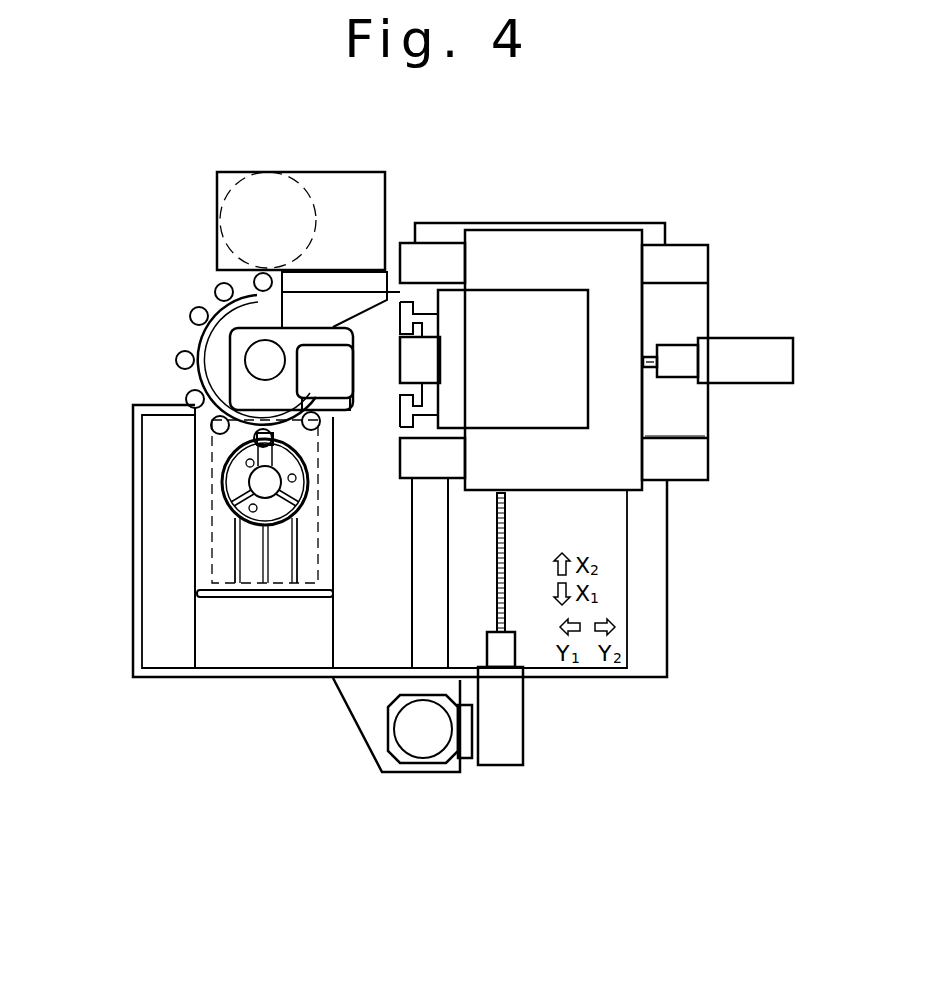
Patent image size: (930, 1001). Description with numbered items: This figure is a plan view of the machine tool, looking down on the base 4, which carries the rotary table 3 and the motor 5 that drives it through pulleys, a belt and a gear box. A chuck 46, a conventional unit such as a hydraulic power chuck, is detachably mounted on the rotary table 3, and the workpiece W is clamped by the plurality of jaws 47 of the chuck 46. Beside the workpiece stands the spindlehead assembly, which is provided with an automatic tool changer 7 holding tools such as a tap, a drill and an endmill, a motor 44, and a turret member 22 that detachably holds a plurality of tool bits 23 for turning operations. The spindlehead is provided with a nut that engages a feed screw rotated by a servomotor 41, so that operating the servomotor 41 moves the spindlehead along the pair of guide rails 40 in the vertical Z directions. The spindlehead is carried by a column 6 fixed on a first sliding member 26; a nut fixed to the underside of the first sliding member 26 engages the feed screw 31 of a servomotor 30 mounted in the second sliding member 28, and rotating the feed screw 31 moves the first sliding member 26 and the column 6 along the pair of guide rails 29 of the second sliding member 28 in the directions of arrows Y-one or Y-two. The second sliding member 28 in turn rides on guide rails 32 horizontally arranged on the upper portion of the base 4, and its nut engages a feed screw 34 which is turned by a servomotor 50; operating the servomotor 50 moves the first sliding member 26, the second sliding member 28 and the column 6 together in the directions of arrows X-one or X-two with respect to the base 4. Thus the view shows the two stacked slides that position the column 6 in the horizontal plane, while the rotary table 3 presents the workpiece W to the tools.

The rotary table 3 is at (202, 573).
The base 4 is at (135, 568).
The motor 5 is at (423, 748).
The column 6 is at (567, 413).
The automatic tool changer 7 is at (302, 170).
The turret member 22 is at (217, 320).
The tool bits 23 is at (230, 280).
The first sliding member 26 is at (637, 410).
The second sliding member 28 is at (680, 433).
The guide rails 29 is at (702, 272).
The servomotor 30 is at (747, 345).
The feed screw 31 is at (650, 368).
The guide rails 32 is at (657, 645).
The feed screw 34 is at (507, 610).
The guide rails 40 is at (404, 312).
The servomotor 41 is at (440, 360).
The motor 44 is at (340, 352).
The chuck 46 is at (230, 475).
The jaws 47 is at (258, 490).
The servomotor 50 is at (505, 765).
The workpiece W is at (227, 510).